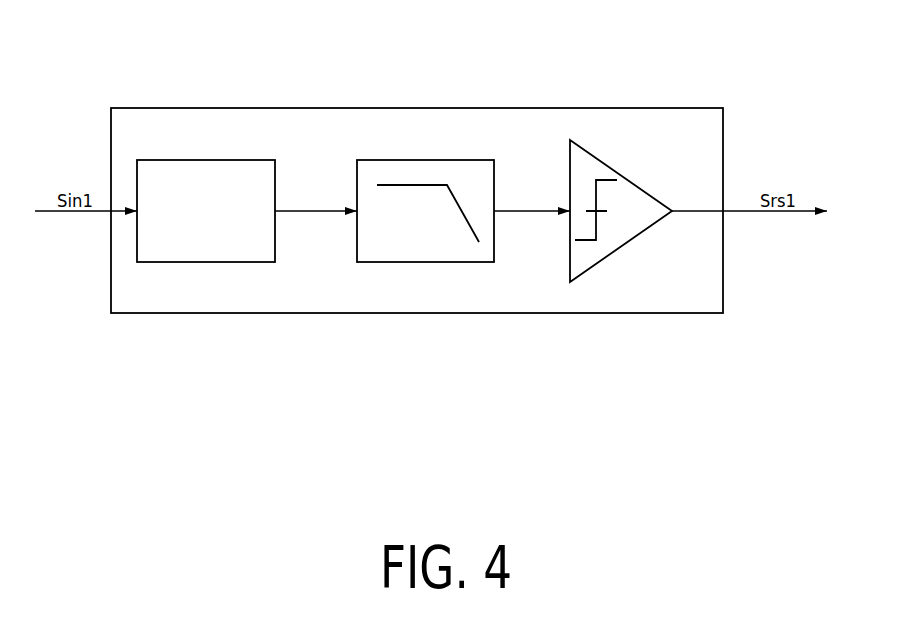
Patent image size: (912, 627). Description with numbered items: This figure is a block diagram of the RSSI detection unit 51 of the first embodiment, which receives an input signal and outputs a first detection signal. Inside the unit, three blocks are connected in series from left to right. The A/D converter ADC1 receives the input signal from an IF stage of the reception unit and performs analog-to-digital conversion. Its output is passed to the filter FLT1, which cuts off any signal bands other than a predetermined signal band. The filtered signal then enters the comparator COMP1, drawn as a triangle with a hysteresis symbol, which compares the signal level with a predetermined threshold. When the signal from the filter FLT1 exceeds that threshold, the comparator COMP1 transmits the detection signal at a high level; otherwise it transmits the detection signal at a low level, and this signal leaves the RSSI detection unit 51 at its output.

The RSSI detection unit 51 is at (723, 108).
The A/D converter ADC1 is at (187, 160).
The filter FLT1 is at (390, 160).
The comparator COMP1 is at (593, 150).